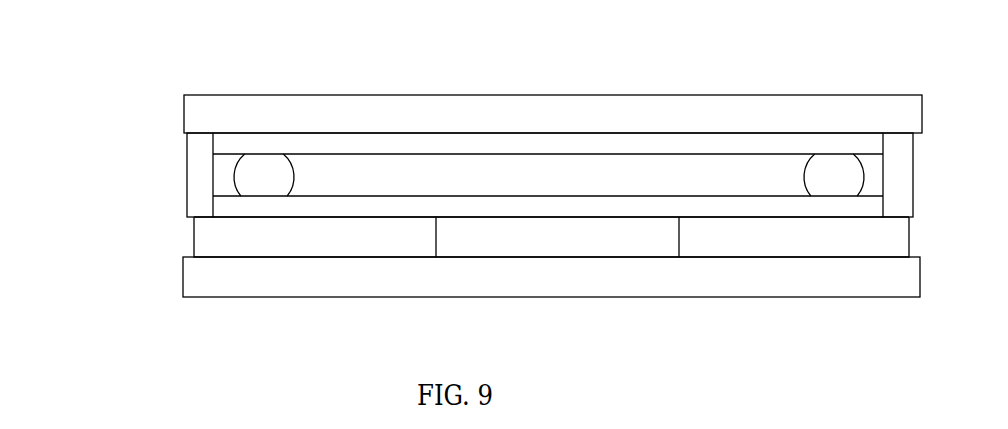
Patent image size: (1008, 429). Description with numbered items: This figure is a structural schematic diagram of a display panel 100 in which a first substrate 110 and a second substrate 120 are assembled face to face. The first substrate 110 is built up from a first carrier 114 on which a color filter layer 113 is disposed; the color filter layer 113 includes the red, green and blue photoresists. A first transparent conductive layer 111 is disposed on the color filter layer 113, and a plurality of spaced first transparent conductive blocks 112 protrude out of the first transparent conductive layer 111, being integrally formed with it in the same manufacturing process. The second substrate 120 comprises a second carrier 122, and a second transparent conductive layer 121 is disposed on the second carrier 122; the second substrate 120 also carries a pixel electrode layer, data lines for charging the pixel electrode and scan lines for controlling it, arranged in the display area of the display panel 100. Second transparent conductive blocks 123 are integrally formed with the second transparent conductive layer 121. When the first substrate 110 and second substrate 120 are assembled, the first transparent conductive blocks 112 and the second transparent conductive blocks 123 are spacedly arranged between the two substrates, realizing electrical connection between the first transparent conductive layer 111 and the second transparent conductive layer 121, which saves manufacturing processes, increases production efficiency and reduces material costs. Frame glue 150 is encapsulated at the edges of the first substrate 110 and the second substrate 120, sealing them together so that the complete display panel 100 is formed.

The display panel 100 is at (117, 200).
The first substrate 110 is at (173, 249).
The first transparent conductive layer 111 is at (634, 222).
The first transparent conductive blocks 112 is at (264, 147).
The color filter layer 113 is at (329, 259).
The first carrier 114 is at (481, 298).
The second substrate 120 is at (171, 136).
The second transparent conductive layer 121 is at (429, 132).
The second carrier 122 is at (673, 92).
The second transparent conductive blocks 123 is at (828, 146).
The frame glue 150 is at (200, 140).